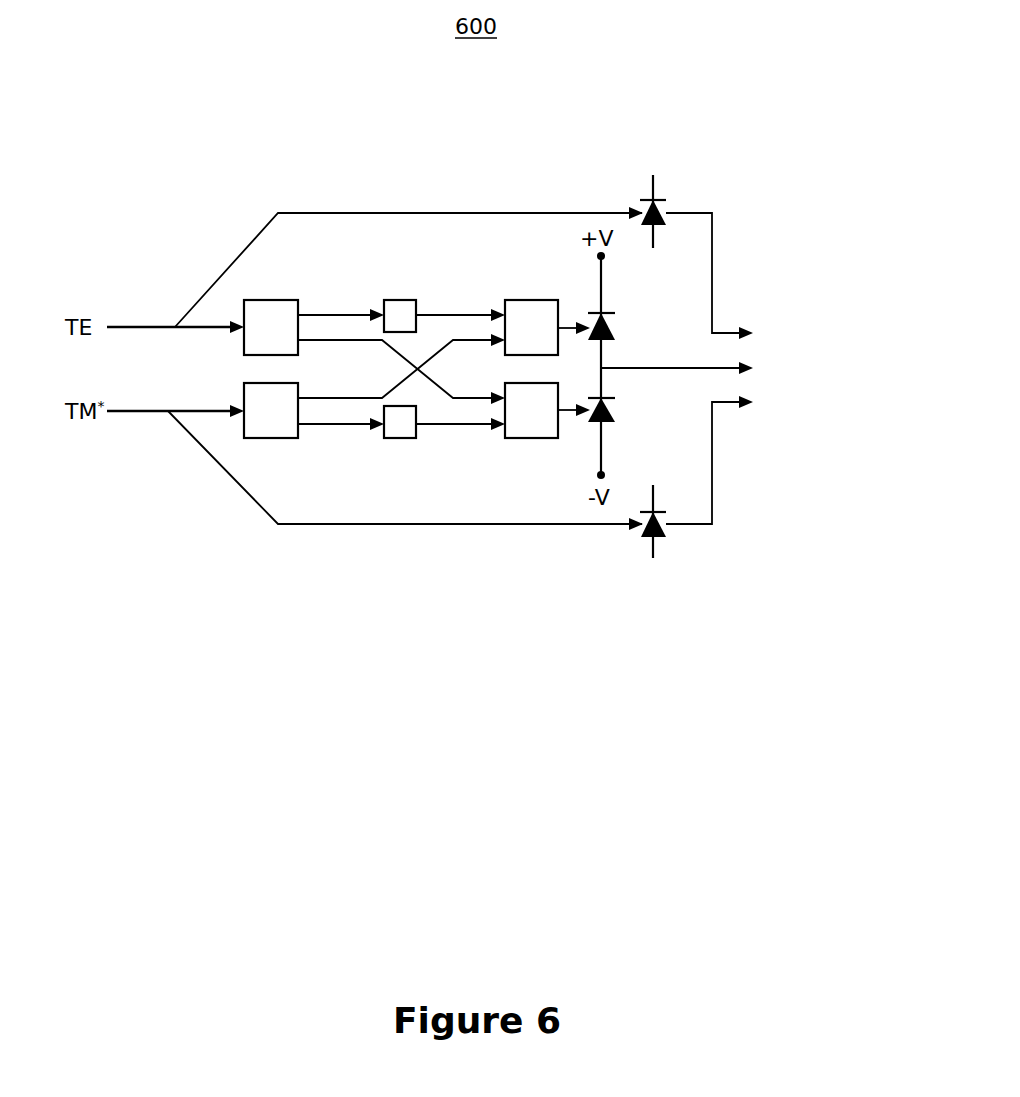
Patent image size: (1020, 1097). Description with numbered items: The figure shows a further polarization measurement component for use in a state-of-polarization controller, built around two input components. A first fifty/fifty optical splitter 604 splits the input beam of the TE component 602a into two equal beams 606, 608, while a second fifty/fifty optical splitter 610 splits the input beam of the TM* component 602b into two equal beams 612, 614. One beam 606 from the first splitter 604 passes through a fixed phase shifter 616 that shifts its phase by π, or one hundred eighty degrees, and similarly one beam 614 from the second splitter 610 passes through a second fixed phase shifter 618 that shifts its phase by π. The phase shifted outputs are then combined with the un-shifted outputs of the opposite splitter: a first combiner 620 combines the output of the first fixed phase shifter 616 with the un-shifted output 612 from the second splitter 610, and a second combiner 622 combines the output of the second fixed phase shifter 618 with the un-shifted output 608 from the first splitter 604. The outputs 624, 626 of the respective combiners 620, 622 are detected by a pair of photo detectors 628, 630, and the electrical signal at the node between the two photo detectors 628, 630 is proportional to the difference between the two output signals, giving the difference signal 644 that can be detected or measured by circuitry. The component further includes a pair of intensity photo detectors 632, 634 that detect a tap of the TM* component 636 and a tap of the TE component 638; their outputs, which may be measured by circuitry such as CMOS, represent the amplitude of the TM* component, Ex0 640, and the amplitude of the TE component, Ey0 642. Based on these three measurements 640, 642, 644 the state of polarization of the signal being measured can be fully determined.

The TE component 602a is at (150, 327).
The TM* component 602b is at (158, 411).
The first 50/50 optical splitter 604 is at (255, 300).
The split beam 606 is at (305, 313).
The split beam 608 is at (318, 340).
The second 50/50 optical splitter 610 is at (252, 438).
The split beam 612 is at (318, 398).
The split beam 614 is at (312, 425).
The first fixed phase shifter 616 is at (400, 300).
The second fixed phase shifter 618 is at (405, 440).
The first combiner 620 is at (520, 300).
The second combiner 622 is at (520, 440).
The combiner output 624 is at (575, 322).
The combiner output 626 is at (565, 413).
The photo detector 628 is at (612, 322).
The photo detector 630 is at (605, 418).
The intensity photo detector 632 is at (657, 200).
The intensity photo detector 634 is at (657, 537).
The tap of the TM* component 636 is at (340, 212).
The tap of the TE component 638 is at (352, 525).
The amplitude of the TM* component (Ex0) 640 is at (790, 330).
The amplitude of the TE component (Ey0) 642 is at (787, 413).
The difference signal 644 is at (787, 380).